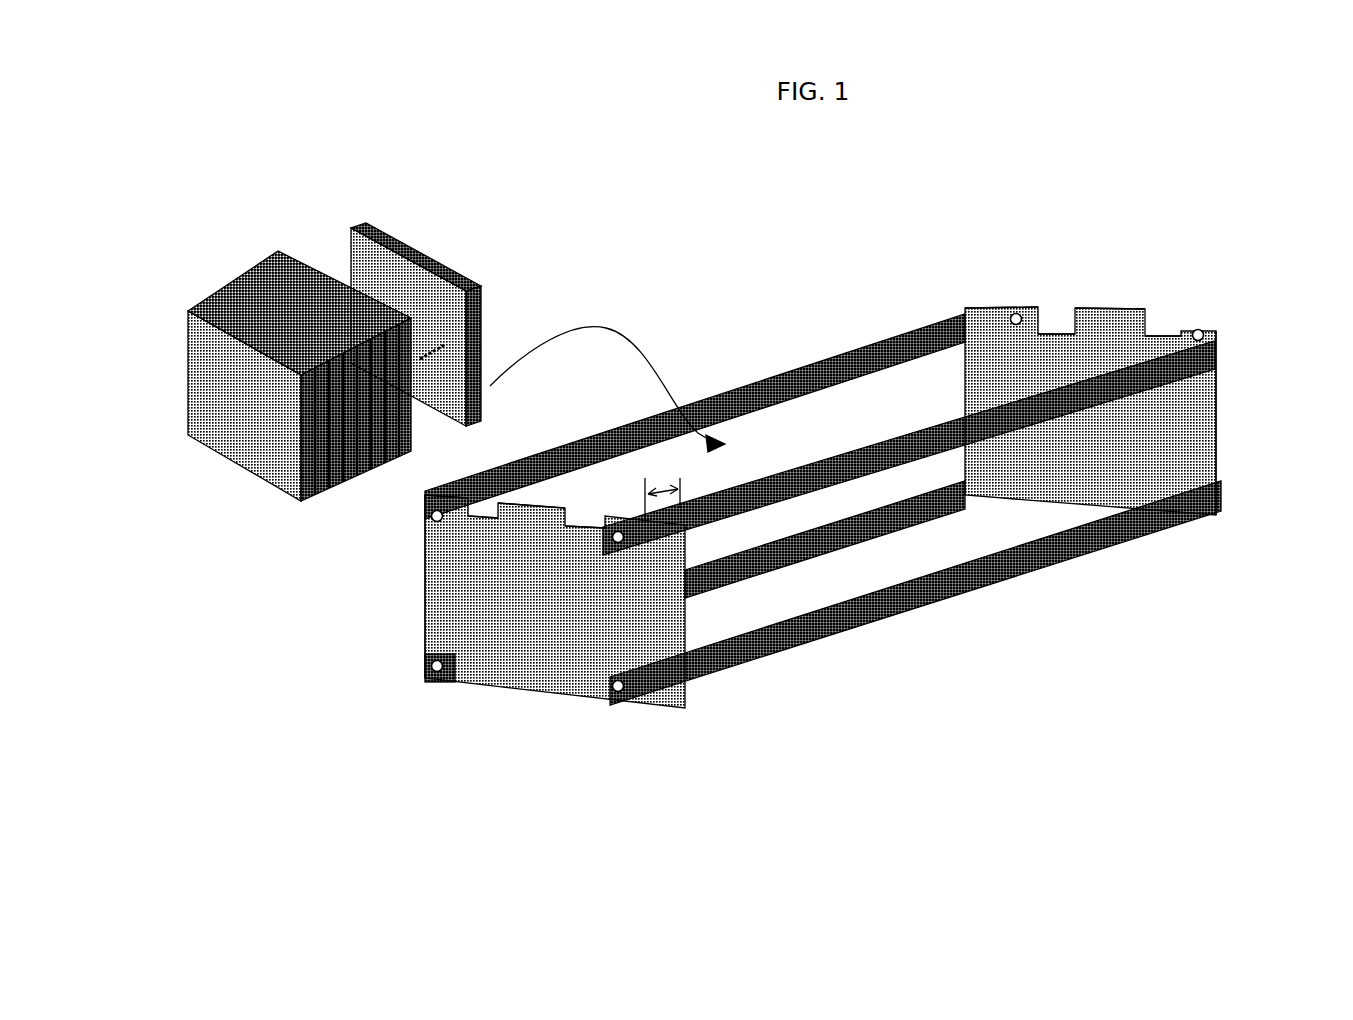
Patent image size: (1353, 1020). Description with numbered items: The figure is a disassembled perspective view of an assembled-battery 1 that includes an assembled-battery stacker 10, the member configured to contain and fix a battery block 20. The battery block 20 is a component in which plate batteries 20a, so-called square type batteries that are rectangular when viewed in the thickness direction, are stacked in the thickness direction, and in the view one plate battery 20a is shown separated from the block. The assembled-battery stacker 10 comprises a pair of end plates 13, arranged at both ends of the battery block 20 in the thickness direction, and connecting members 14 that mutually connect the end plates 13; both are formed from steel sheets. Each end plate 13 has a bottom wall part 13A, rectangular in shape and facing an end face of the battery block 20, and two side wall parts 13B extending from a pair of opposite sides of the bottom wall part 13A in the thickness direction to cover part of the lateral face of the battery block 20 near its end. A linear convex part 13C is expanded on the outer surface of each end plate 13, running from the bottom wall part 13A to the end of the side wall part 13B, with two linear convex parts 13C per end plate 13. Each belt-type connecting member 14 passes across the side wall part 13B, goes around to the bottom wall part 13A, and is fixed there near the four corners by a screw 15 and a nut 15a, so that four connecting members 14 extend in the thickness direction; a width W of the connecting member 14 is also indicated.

The assembled-battery 1 is at (1128, 765).
The assembled-battery stacker 10 is at (731, 287).
The end plate 13 is at (818, 507).
The bottom wall part 13A is at (1107, 303).
The side wall part 13B is at (1172, 407).
The linear convex part 13C is at (1210, 372).
The connecting member 14 is at (783, 375).
The screw 15 is at (423, 508).
The nut 15a is at (1008, 304).
The battery block 20 is at (330, 128).
The plate battery 20a is at (200, 290).
The width W is at (662, 488).